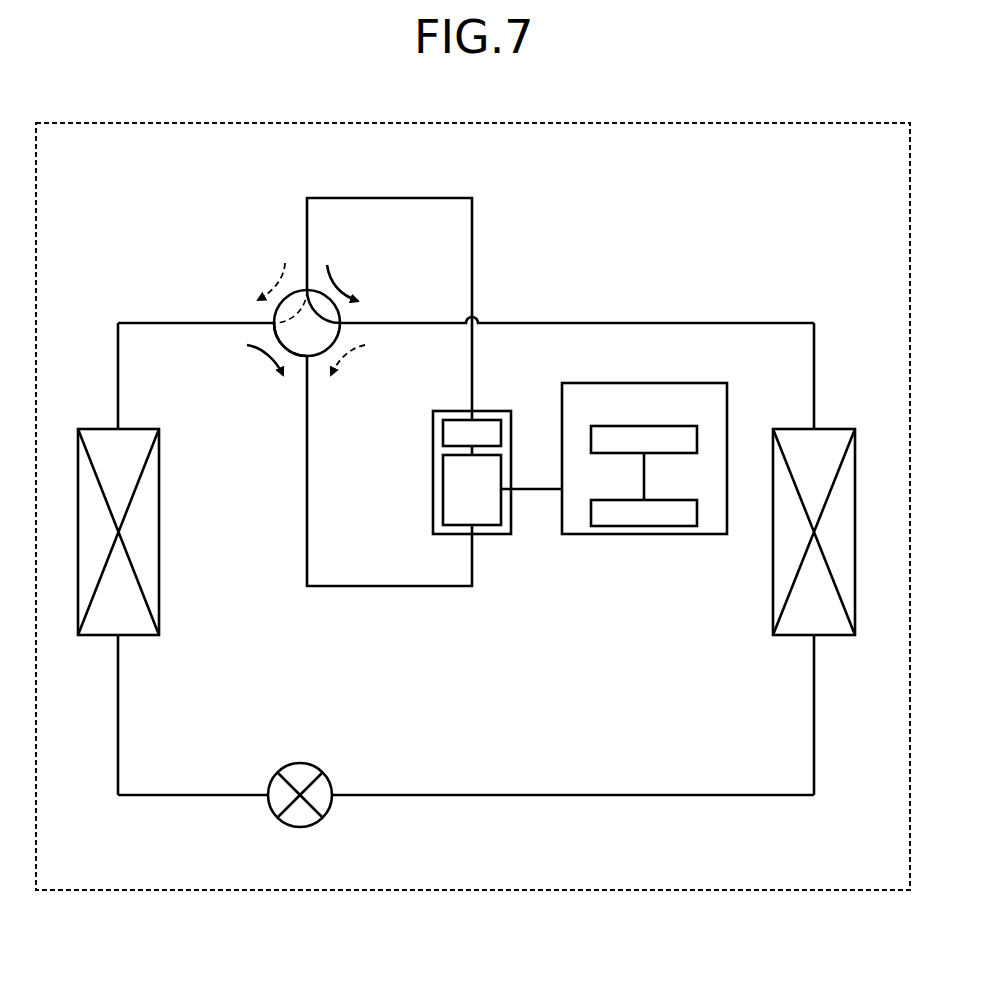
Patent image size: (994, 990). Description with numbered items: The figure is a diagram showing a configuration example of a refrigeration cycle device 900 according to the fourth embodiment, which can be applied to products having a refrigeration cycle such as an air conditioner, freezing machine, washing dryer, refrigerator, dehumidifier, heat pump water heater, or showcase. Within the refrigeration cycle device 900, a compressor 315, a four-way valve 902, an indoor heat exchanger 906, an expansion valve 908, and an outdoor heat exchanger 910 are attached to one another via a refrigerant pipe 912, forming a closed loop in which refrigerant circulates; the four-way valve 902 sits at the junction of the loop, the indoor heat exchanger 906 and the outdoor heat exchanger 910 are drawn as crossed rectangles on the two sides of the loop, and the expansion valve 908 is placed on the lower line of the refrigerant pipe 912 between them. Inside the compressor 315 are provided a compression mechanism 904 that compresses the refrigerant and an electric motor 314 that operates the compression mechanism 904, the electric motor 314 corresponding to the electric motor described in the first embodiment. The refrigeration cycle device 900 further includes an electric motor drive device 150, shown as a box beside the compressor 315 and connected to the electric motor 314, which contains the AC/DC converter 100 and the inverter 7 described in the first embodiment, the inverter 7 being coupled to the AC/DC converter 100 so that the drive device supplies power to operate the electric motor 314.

The refrigeration cycle device 900 is at (620, 123).
The four-way valve 902 is at (305, 290).
The compression mechanism 904 is at (443, 431).
The electric motor 314 is at (443, 500).
The compressor 315 is at (489, 411).
The electric motor drive device 150 is at (669, 383).
The AC/DC converter 100 is at (661, 426).
The inverter 7 is at (663, 500).
The outdoor heat exchanger 910 is at (135, 429).
The indoor heat exchanger 906 is at (831, 429).
The expansion valve 908 is at (305, 764).
The refrigerant pipe 912 is at (525, 795).